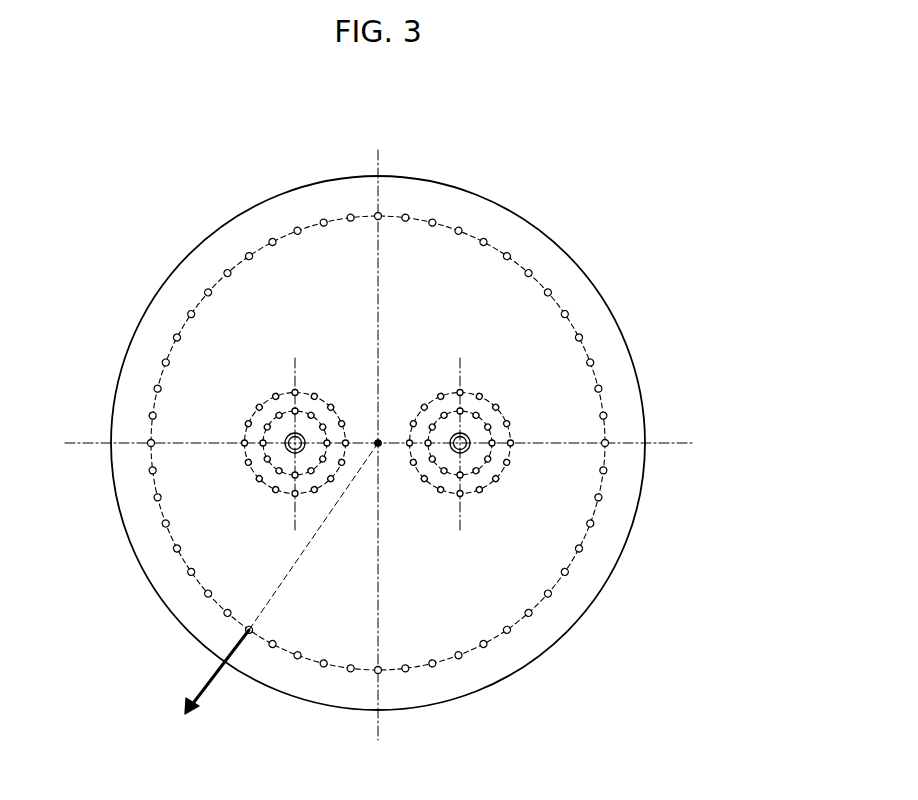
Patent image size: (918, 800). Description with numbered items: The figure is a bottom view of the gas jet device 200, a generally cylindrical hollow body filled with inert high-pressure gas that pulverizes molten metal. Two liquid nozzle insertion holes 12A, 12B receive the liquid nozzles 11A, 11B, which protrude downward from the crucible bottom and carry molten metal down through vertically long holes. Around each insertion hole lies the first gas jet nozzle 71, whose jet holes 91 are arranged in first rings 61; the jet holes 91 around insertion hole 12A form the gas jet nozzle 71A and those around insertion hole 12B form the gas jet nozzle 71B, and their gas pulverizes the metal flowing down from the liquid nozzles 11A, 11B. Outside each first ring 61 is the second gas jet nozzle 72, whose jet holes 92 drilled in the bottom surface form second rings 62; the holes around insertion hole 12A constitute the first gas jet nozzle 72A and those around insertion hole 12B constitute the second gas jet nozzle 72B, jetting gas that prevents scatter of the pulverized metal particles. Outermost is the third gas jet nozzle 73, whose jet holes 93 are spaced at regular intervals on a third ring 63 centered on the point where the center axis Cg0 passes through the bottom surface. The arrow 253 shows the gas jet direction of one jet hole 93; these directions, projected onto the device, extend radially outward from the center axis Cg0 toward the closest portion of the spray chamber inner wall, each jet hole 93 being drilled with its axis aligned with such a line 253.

The gas jet device 200 is at (263, 198).
The third gas jet nozzle 73 is at (152, 357).
The third ring 63 is at (208, 287).
The jet holes 93 is at (163, 523).
The gas jet direction 253 is at (222, 662).
The liquid nozzle insertion hole 12A is at (301, 446).
The liquid nozzle insertion hole 12B is at (471, 448).
The liquid nozzle 11A is at (292, 446).
The liquid nozzle 11B is at (471, 444).
The first gas jet nozzle 71 is at (377, 395).
The gas jet nozzle 71A is at (320, 413).
The gas jet nozzle 71B is at (443, 412).
The second gas jet nozzle 72 is at (378, 498).
The first gas jet nozzle 72A is at (322, 500).
The second gas jet nozzle 72B is at (450, 475).
The second rings 62 is at (264, 405).
The first rings 61 is at (284, 410).
The jet holes 92 is at (243, 444).
The jet holes 91 is at (265, 460).
The center axis Cg0 is at (378, 430).